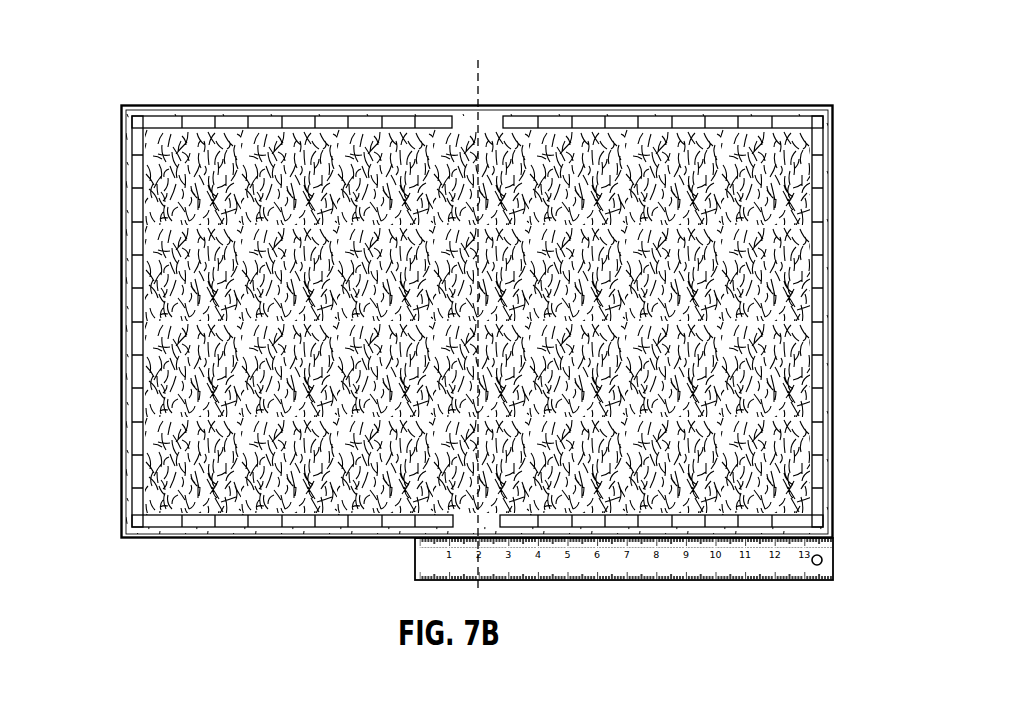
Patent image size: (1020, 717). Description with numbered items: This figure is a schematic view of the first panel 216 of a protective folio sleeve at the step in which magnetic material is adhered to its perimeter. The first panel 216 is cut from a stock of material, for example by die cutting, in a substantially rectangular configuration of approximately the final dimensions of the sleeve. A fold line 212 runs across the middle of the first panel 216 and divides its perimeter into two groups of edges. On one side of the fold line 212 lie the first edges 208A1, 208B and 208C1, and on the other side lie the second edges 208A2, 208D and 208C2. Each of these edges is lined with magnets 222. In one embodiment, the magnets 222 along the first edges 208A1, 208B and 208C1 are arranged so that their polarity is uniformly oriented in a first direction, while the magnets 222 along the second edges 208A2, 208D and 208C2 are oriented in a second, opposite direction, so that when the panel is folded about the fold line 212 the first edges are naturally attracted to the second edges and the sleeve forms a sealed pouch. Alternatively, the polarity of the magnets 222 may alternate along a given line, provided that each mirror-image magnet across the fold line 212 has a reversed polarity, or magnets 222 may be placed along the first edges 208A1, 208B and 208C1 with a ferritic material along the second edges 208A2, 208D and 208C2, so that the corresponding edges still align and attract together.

The first edge 208A1 is at (338, 524).
The second edge 208A2 is at (647, 543).
The first edge 208B is at (130, 367).
The first edge 208C1 is at (238, 107).
The second edge 208C2 is at (683, 104).
The second edge 208D is at (823, 344).
The fold line 212 is at (478, 60).
The first panel 216 is at (760, 172).
The magnets 222 is at (140, 207).